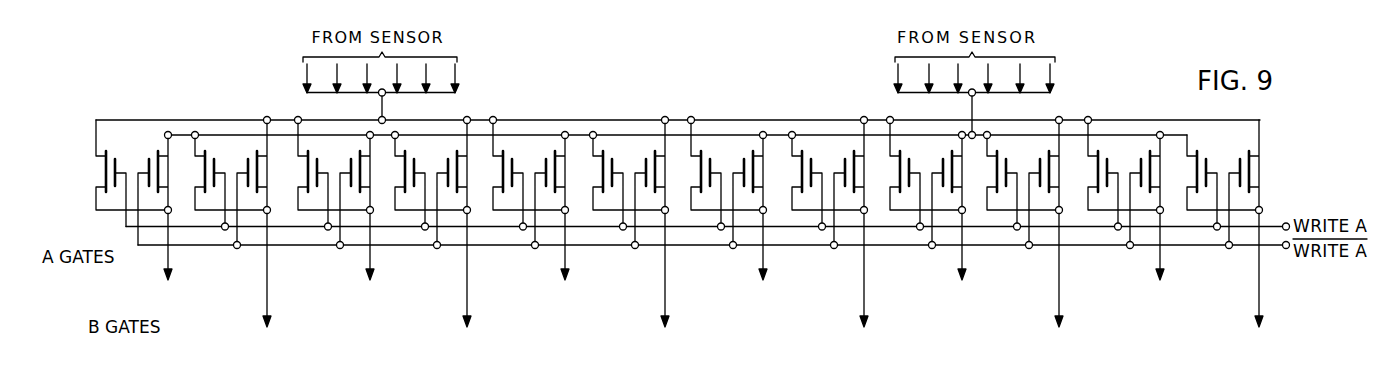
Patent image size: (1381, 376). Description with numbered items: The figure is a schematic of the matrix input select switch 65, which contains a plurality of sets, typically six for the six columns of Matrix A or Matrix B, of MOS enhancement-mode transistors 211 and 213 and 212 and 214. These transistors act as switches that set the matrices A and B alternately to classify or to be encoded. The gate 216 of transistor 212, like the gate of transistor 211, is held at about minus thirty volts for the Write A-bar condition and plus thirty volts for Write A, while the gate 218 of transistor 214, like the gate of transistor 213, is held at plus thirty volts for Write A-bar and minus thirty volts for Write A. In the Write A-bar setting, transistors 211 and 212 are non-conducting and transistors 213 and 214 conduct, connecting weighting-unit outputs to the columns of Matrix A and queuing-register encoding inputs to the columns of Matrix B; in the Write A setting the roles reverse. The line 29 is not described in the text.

The sensor signal line 29 is at (176, 118).
The matrix input select switch 65 is at (1164, 112).
The MOS enhancement-mode transistor 211 is at (113, 190).
The MOS enhancement-mode transistor 212 is at (213, 192).
The MOS enhancement-mode transistor 213 is at (153, 151).
The MOS enhancement-mode transistor 214 is at (258, 165).
The gate of transistor 212 216 is at (814, 231).
The gate of transistor 214 218 is at (845, 195).